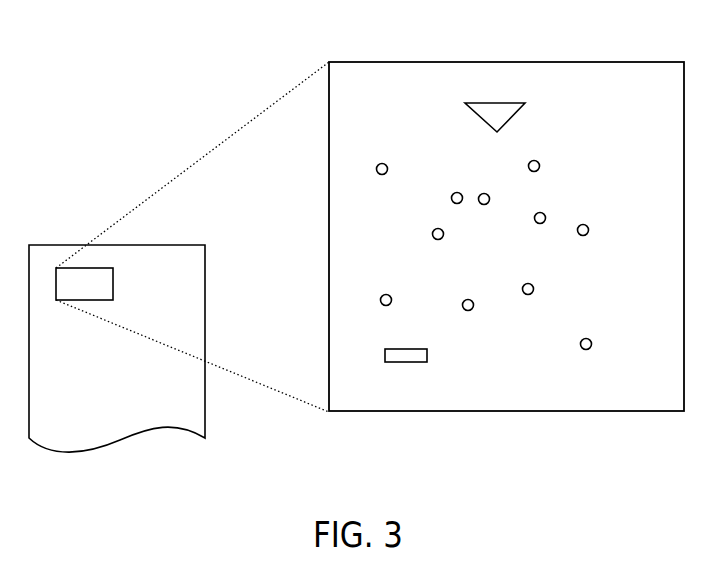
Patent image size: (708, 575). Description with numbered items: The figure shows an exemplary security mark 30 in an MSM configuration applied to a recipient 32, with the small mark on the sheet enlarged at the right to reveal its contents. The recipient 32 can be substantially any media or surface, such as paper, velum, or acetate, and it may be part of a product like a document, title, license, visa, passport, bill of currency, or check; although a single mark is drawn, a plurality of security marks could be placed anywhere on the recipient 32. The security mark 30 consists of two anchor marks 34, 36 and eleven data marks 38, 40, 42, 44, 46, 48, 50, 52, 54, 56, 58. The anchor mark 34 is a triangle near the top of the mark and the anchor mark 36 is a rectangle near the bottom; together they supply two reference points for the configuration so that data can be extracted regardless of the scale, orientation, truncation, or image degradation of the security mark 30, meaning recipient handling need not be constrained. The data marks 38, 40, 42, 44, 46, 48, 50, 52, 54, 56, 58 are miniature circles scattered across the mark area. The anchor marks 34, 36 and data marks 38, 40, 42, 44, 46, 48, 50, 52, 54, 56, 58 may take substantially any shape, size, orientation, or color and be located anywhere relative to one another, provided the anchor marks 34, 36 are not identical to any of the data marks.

The security mark 30 is at (372, 60).
The recipient 32 is at (58, 243).
The anchor mark 34 is at (518, 109).
The anchor mark 36 is at (427, 355).
The data mark 38 is at (388, 166).
The data mark 40 is at (392, 297).
The data mark 42 is at (450, 195).
The data mark 44 is at (444, 231).
The data mark 46 is at (474, 302).
The data mark 48 is at (490, 196).
The data mark 50 is at (540, 163).
The data mark 52 is at (546, 215).
The data mark 54 is at (589, 227).
The data mark 56 is at (534, 286).
The data mark 58 is at (592, 341).